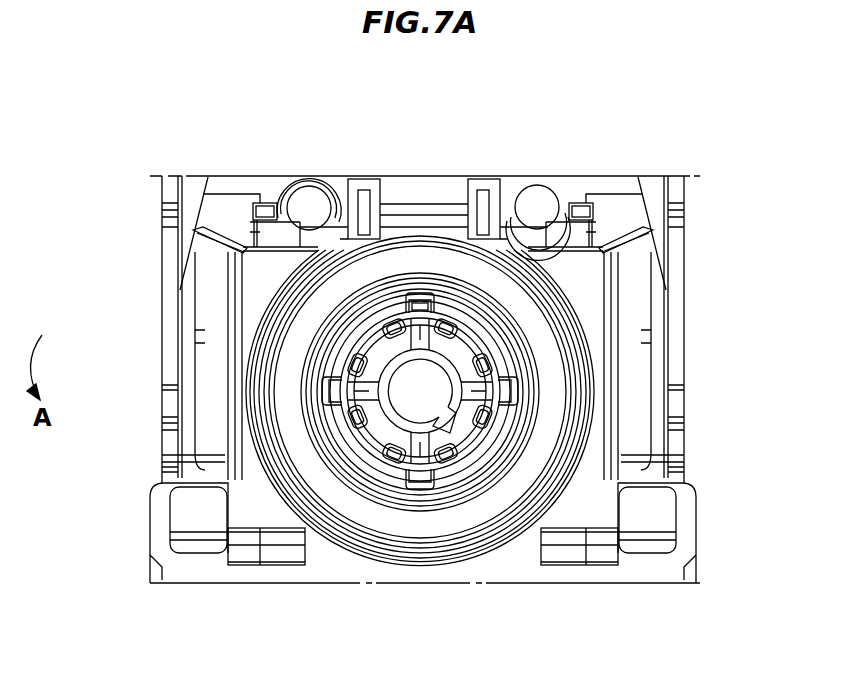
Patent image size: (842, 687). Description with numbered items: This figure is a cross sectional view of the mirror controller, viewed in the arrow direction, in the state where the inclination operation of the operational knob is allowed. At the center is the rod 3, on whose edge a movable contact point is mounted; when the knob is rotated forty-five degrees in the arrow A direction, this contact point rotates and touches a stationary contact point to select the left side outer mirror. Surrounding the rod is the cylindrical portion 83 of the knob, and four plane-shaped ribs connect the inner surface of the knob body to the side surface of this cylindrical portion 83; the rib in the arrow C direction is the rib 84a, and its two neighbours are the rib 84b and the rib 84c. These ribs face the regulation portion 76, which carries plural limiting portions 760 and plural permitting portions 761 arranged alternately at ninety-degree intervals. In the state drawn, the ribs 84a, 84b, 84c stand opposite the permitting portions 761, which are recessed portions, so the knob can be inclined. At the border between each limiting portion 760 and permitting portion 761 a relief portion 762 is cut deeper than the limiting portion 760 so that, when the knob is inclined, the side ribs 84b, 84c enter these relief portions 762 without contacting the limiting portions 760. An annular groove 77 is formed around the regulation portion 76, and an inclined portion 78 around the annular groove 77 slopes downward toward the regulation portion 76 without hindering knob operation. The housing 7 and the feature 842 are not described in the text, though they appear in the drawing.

The rod 3 is at (420, 398).
The housing 7 is at (270, 282).
The regulation portion 76 is at (338, 437).
The annular groove 77 is at (477, 445).
The inclined portion 78 is at (377, 520).
The cylindrical portion 83 is at (437, 432).
The rib 84a is at (408, 288).
The rib 84b is at (508, 385).
The rib 84c is at (342, 378).
The pocket tab 842 is at (437, 290).
The limiting portion 760 is at (372, 350).
The permitting portion 761 is at (419, 290).
The relief portion 762 is at (352, 350).